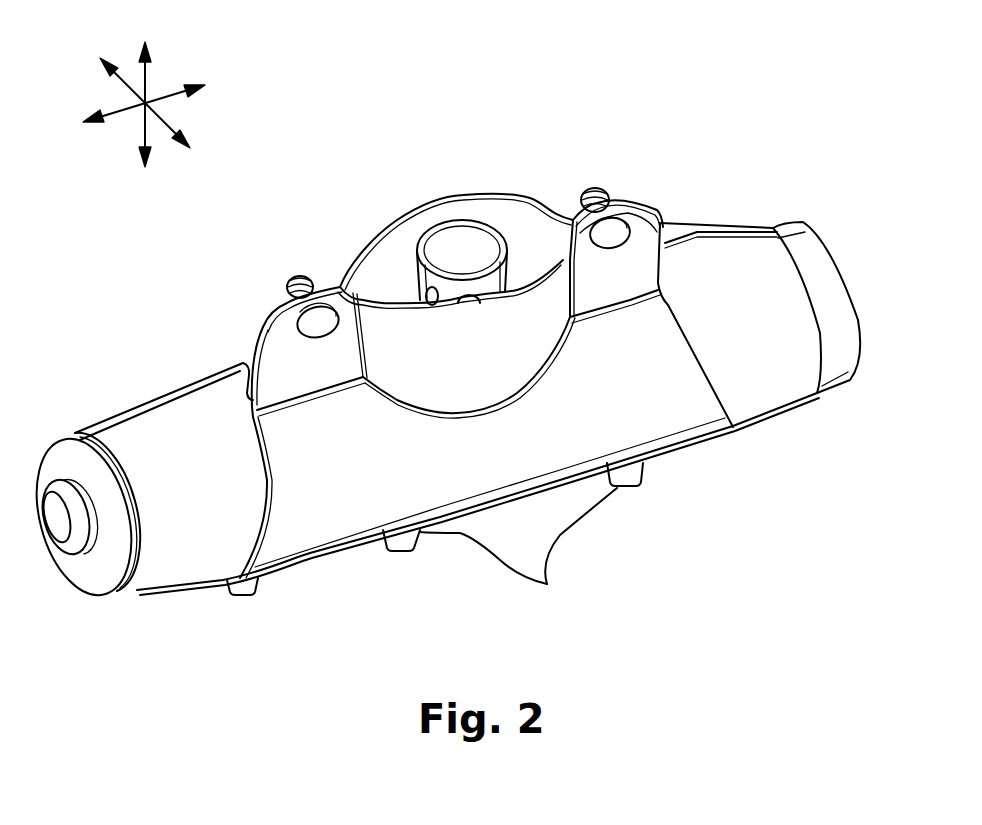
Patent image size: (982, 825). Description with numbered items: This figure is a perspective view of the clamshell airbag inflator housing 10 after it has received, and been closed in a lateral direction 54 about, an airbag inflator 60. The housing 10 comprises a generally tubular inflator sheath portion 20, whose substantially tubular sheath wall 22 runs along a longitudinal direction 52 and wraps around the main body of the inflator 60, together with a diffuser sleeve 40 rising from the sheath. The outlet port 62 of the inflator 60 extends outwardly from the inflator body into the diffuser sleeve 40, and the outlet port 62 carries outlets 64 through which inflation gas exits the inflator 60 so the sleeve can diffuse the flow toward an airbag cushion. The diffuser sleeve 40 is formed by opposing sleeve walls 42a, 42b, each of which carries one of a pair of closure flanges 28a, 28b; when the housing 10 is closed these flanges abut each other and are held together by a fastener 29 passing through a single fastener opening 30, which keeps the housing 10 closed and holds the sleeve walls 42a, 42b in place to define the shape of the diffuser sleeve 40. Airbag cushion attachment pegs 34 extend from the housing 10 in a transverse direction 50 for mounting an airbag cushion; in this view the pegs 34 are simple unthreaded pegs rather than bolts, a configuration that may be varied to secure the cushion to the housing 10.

The clamshell airbag inflator housing 10 is at (712, 142).
The inflator sheath portion 20 is at (702, 452).
The sheath wall 22 is at (670, 450).
The closure flange 28a is at (657, 212).
The closure flange 28b is at (633, 200).
The fastener 29 is at (593, 185).
The fastener opening 30 is at (622, 233).
The airbag mounting peg 34 is at (500, 547).
The diffuser sleeve 40 is at (343, 230).
The sleeve wall 42a is at (540, 245).
The sleeve wall 42b is at (413, 208).
The transverse direction 50 is at (137, 122).
The longitudinal direction 52 is at (163, 93).
The lateral direction 54 is at (162, 118).
The airbag inflator 60 is at (143, 393).
The outlet port 62 is at (461, 240).
The outlets 64 is at (431, 292).